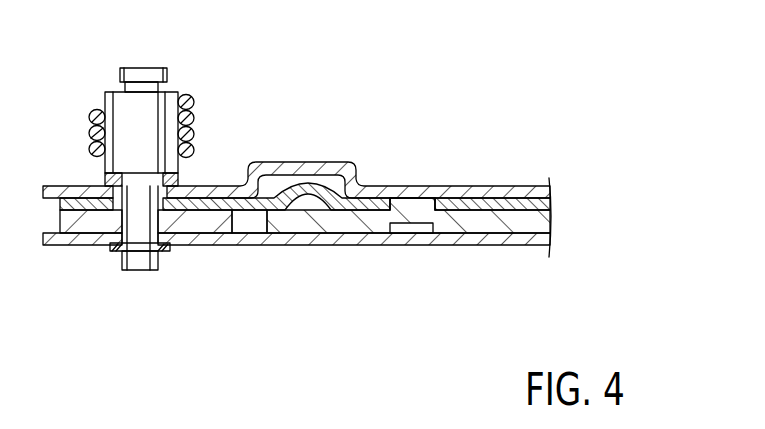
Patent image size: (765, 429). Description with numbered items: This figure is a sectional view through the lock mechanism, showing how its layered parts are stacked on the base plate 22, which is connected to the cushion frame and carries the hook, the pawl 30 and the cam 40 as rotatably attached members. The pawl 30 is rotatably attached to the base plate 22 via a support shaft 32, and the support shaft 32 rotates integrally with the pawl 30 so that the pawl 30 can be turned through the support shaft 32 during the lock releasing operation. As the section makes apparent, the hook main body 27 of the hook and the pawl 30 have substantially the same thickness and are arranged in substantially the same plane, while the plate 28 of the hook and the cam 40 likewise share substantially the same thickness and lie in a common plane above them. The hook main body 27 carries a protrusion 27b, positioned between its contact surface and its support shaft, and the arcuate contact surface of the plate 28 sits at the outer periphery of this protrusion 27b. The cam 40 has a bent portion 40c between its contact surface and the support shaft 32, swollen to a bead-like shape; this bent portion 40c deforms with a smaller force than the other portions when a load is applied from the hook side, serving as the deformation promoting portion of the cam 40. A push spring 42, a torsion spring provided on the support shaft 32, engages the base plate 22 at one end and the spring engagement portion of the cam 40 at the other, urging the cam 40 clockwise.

The base plate 22 is at (420, 247).
The hook main body 27 is at (408, 218).
The protrusion 27b is at (403, 208).
The plate 28 is at (498, 199).
The pawl 30 is at (205, 222).
The support shaft 32 is at (108, 100).
The cam 40 is at (305, 149).
The bent portion 40c is at (297, 193).
The push spring 42 is at (187, 97).